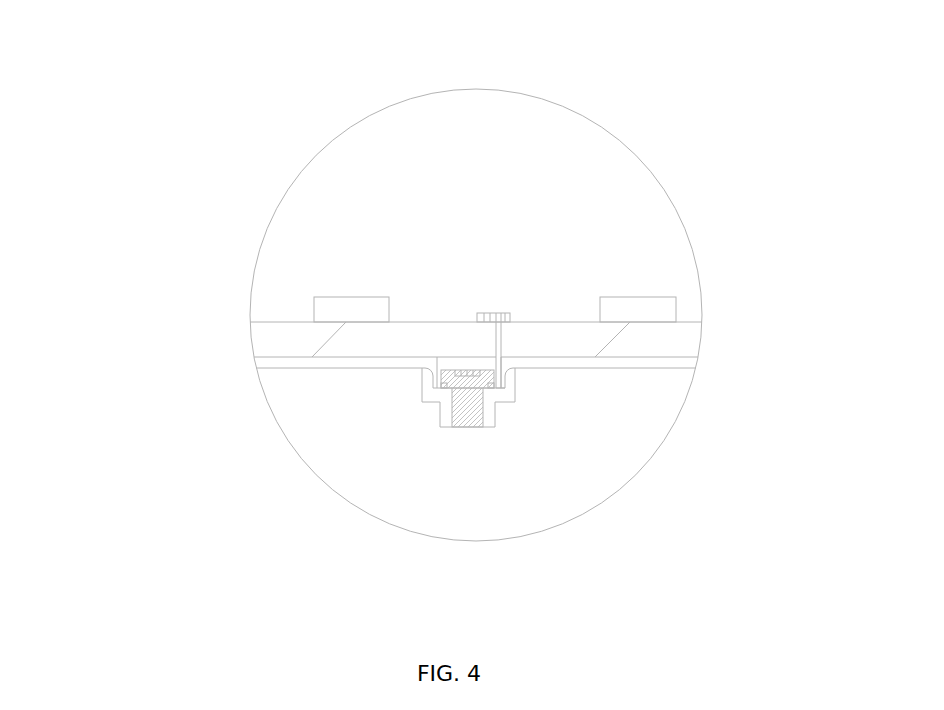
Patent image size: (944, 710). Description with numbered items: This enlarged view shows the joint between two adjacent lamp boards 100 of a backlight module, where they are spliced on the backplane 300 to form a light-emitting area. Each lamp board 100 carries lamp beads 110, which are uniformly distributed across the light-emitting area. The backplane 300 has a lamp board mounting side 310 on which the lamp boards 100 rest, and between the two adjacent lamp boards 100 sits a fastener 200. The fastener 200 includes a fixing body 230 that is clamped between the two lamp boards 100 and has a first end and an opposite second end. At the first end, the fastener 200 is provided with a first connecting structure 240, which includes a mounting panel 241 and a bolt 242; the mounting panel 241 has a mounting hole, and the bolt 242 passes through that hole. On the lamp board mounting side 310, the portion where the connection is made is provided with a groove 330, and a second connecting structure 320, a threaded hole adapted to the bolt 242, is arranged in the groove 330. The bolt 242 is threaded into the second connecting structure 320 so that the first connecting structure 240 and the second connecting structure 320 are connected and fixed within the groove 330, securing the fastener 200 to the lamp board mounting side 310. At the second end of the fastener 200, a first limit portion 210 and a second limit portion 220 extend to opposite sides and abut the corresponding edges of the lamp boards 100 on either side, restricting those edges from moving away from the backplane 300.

The lamp board 100 is at (282, 337).
The lamp bead 110 is at (355, 297).
The fastener 200 is at (500, 338).
The first limit portion 210 is at (480, 313).
The second limit portion 220 is at (510, 313).
The fixing body 230 is at (508, 355).
The first connecting structure 240 is at (572, 590).
The mounting panel 241 is at (475, 428).
The bolt 242 is at (455, 428).
The backplane 300 is at (283, 368).
The lamp board mounting side 310 is at (268, 355).
The second connecting structure 320 is at (430, 417).
The groove 330 is at (423, 363).